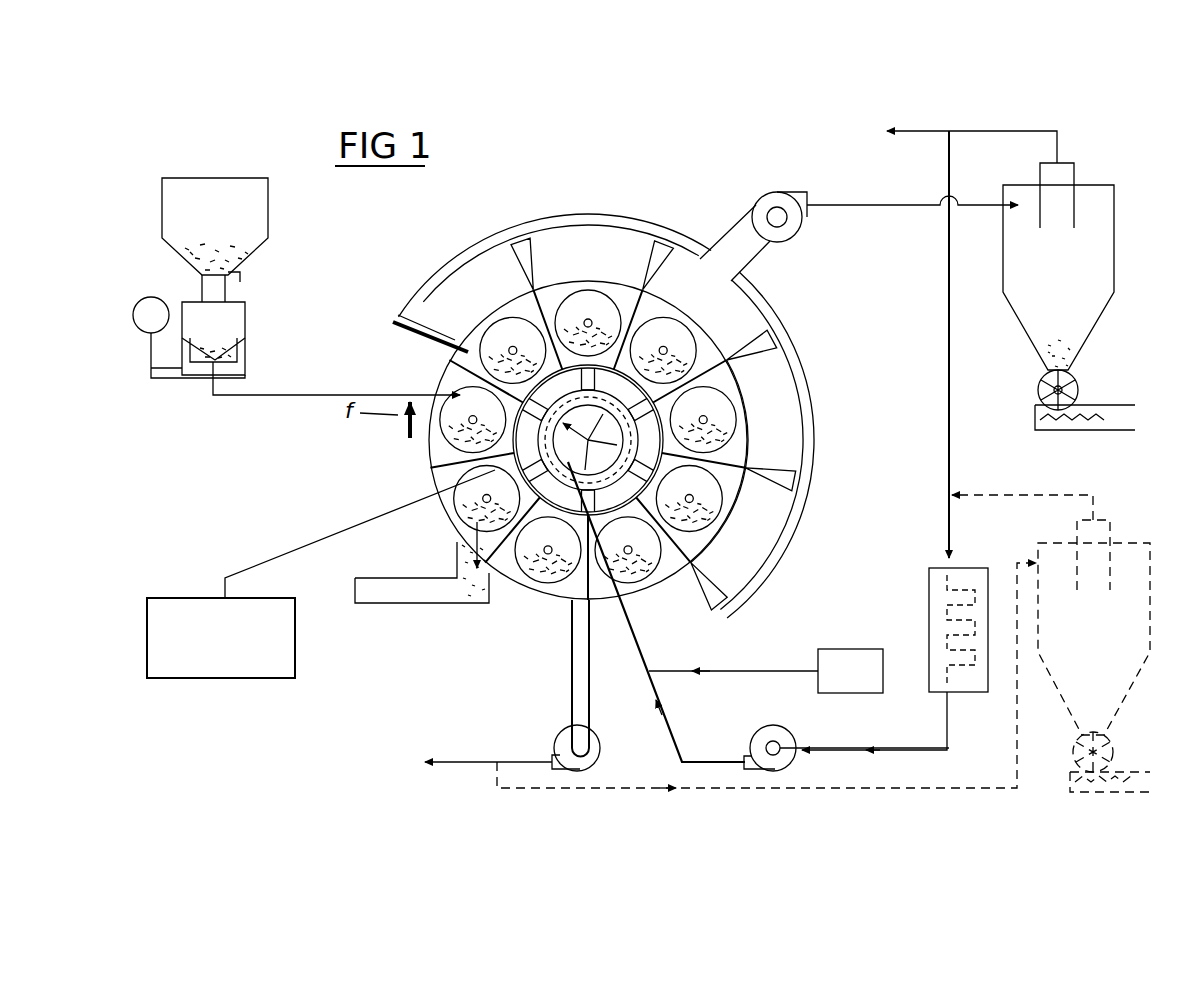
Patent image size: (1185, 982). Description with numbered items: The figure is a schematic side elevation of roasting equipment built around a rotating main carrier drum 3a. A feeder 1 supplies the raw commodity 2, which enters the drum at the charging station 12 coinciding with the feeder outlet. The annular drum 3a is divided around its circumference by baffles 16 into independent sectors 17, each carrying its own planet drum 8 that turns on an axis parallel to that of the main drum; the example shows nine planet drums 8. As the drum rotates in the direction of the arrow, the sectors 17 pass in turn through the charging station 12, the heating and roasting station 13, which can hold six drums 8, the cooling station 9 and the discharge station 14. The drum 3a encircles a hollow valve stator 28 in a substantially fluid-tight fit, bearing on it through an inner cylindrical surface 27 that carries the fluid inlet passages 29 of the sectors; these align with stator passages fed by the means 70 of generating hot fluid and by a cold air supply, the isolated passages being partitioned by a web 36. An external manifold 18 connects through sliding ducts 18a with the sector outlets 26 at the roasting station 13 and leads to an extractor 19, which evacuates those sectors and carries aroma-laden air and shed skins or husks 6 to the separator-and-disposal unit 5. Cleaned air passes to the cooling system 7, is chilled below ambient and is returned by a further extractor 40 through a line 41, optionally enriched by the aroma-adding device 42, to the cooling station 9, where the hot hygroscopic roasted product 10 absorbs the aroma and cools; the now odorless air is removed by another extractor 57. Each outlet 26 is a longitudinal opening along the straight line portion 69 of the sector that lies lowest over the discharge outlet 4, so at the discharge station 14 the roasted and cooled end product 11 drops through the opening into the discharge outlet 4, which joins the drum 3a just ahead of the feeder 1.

The feeder 1 is at (262, 300).
The raw commodity 2 is at (210, 235).
The drum 3a is at (579, 278).
The discharge outlet 4 is at (388, 606).
The separator-and-disposal unit 5 is at (1097, 173).
The skins or husks 6 is at (1075, 355).
The cooling system 7 is at (925, 613).
The planet drum 8 is at (745, 272).
The cooling station 9 is at (525, 602).
The roasted product 10 is at (525, 562).
The end product 11 is at (462, 518).
The charging station 12 is at (432, 368).
The heating and roasting station 13 is at (488, 303).
The discharge station 14 is at (433, 514).
The baffles 16 is at (712, 300).
The sectors 17 is at (453, 347).
The manifold 18 is at (611, 214).
The ducts 18a is at (520, 250).
The extractor 19 is at (780, 193).
The outlet 26 is at (543, 295).
The inner cylindrical surface 27 is at (752, 500).
The valve stator 28 is at (735, 392).
The fluid inlet passages 29 is at (572, 300).
The web 36 is at (587, 438).
The extractor 40 is at (757, 735).
The line 41 is at (667, 737).
The device 42 is at (766, 671).
The extractor 57 is at (560, 742).
The straight line portion 69 is at (477, 560).
The means of generating a hot fluid 70 is at (217, 680).